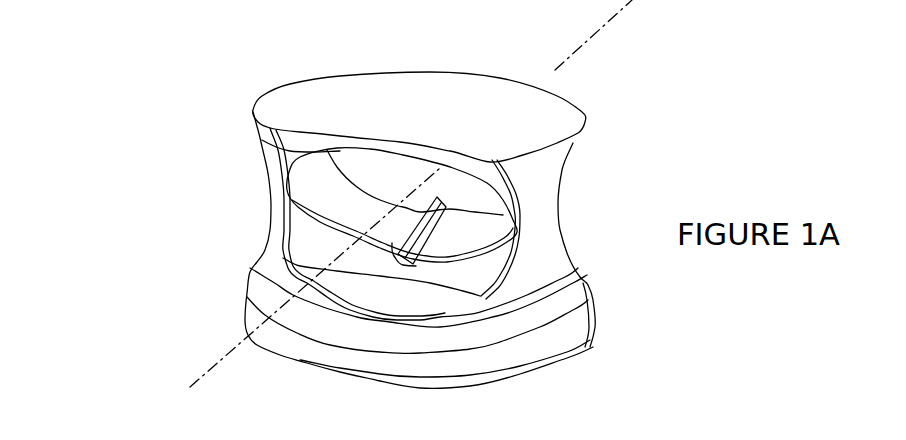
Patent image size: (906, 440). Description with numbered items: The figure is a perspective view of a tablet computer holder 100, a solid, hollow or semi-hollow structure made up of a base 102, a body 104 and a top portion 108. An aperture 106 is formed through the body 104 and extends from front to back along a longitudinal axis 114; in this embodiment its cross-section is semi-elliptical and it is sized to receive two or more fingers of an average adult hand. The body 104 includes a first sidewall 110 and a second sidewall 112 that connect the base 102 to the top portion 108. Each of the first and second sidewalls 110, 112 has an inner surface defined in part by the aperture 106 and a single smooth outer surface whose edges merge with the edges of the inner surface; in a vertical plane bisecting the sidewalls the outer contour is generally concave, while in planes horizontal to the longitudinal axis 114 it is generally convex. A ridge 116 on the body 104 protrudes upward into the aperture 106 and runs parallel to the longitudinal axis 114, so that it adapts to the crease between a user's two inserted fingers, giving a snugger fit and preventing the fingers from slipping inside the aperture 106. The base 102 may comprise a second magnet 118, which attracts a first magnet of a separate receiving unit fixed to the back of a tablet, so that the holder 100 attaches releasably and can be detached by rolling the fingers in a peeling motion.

The tablet computer holder 100 is at (173, 78).
The base 102 is at (238, 303).
The body 104 is at (267, 260).
The aperture 106 is at (387, 175).
The top portion 108 is at (427, 102).
The first sidewall 110 is at (275, 212).
The second sidewall 112 is at (533, 228).
The longitudinal axis 114 is at (392, 211).
The ridge 116 is at (428, 222).
The second magnet 118 is at (363, 387).